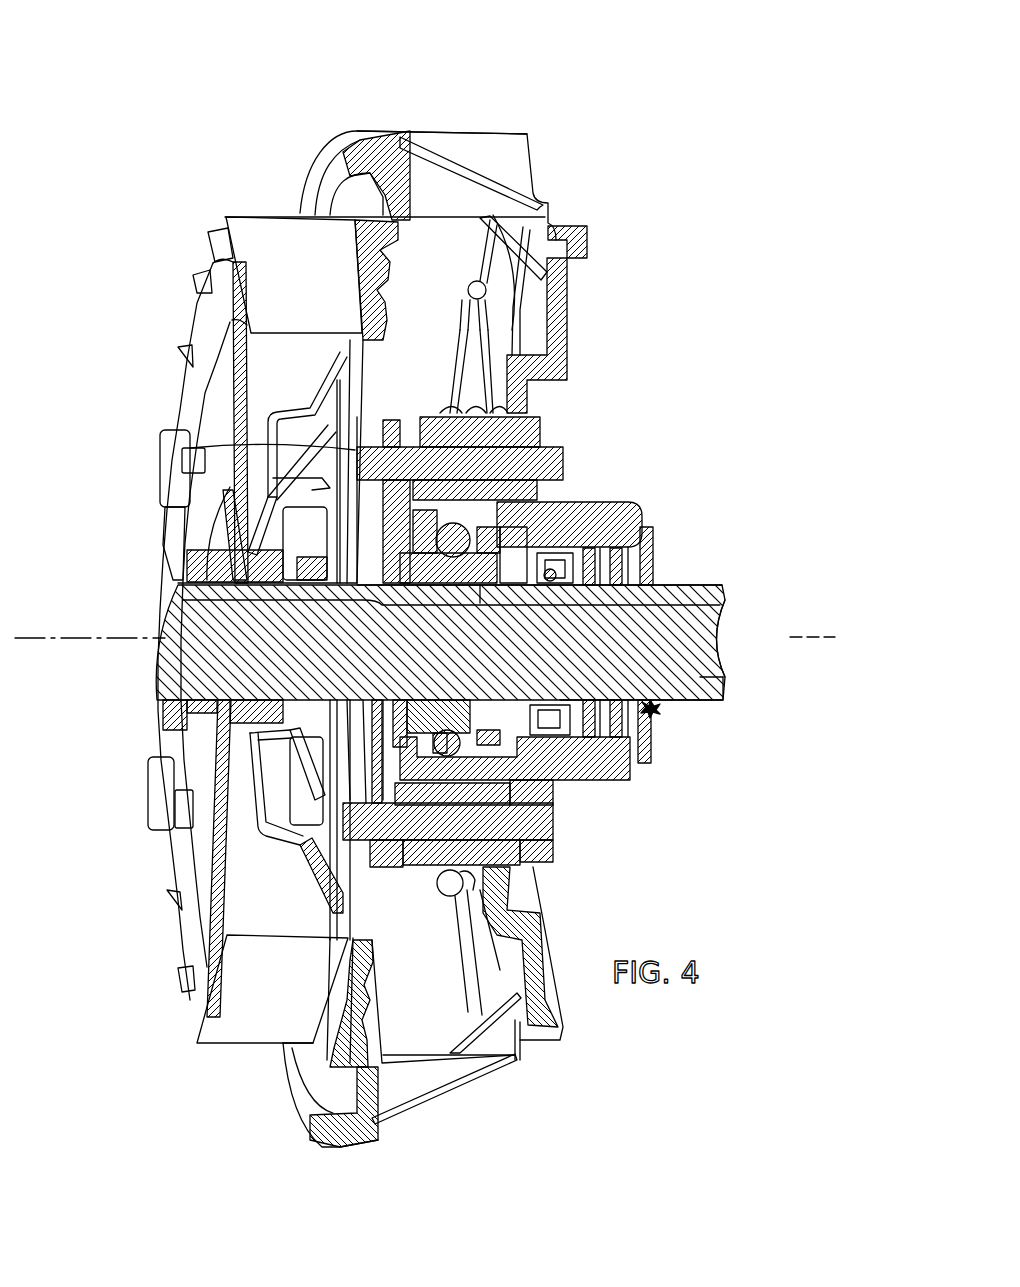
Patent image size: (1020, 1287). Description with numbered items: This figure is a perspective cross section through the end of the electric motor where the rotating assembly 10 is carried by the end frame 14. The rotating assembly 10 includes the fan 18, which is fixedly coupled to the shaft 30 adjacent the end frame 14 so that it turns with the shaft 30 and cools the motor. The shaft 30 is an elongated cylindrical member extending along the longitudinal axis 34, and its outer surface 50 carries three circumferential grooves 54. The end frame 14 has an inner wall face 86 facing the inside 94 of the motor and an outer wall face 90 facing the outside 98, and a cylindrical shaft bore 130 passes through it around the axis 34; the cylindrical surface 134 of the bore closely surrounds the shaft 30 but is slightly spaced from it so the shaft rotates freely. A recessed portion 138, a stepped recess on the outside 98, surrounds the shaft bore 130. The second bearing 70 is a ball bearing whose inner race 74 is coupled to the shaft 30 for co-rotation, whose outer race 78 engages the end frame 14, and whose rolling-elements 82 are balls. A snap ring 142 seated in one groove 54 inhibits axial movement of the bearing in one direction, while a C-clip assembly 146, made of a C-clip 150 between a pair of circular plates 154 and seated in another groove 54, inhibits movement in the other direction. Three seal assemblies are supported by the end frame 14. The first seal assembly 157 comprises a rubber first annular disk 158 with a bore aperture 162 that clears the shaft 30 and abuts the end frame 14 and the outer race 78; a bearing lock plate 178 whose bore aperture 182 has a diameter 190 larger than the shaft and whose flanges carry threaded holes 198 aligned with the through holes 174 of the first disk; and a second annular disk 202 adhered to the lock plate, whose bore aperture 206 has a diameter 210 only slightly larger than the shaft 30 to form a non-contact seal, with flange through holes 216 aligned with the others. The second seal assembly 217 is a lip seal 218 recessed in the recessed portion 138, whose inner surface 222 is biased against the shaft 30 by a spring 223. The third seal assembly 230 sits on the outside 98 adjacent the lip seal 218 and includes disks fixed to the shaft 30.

The rotating assembly 10 is at (721, 52).
The end frame 14 is at (473, 124).
The fan 18 is at (195, 320).
The shaft 30 is at (693, 587).
The longitudinal axis 34 is at (818, 645).
The outer surface 50 is at (707, 582).
The circumferential grooves 54 is at (725, 605).
The second bearing 70 is at (520, 795).
The inner race 74 is at (655, 533).
The outer race 78 is at (568, 487).
The rolling-elements 82 is at (600, 505).
The inner wall face 86 is at (568, 330).
The outer wall face 90 is at (575, 311).
The inside 94 is at (540, 289).
The outside 98 is at (555, 286).
The shaft bore 130 is at (653, 560).
The cylindrical surface 134 is at (653, 722).
The recessed portion 138 is at (648, 740).
The snap ring 142 is at (640, 763).
The C-clip assembly 146 is at (250, 553).
The C-clip 150 is at (250, 574).
The circular plates 154 is at (350, 518).
The first seal assembly 157 is at (366, 880).
The first annular disk 158 is at (372, 880).
The bore aperture 162 is at (160, 450).
The through hole 174 is at (447, 413).
The bearing lock plate 178 is at (383, 920).
The bore aperture 182 is at (350, 498).
The diameter 190 is at (367, 781).
The threaded hole 198 is at (300, 413).
The second annular disk 202 is at (280, 880).
The bore aperture 206 is at (183, 600).
The diameter 210 is at (360, 706).
The through hole 216 is at (153, 812).
The second seal assembly 217 is at (562, 679).
The lip seal 218 is at (640, 753).
The inner surface 222 is at (723, 678).
The spring 223 is at (497, 560).
The third seal assembly 230 is at (657, 704).